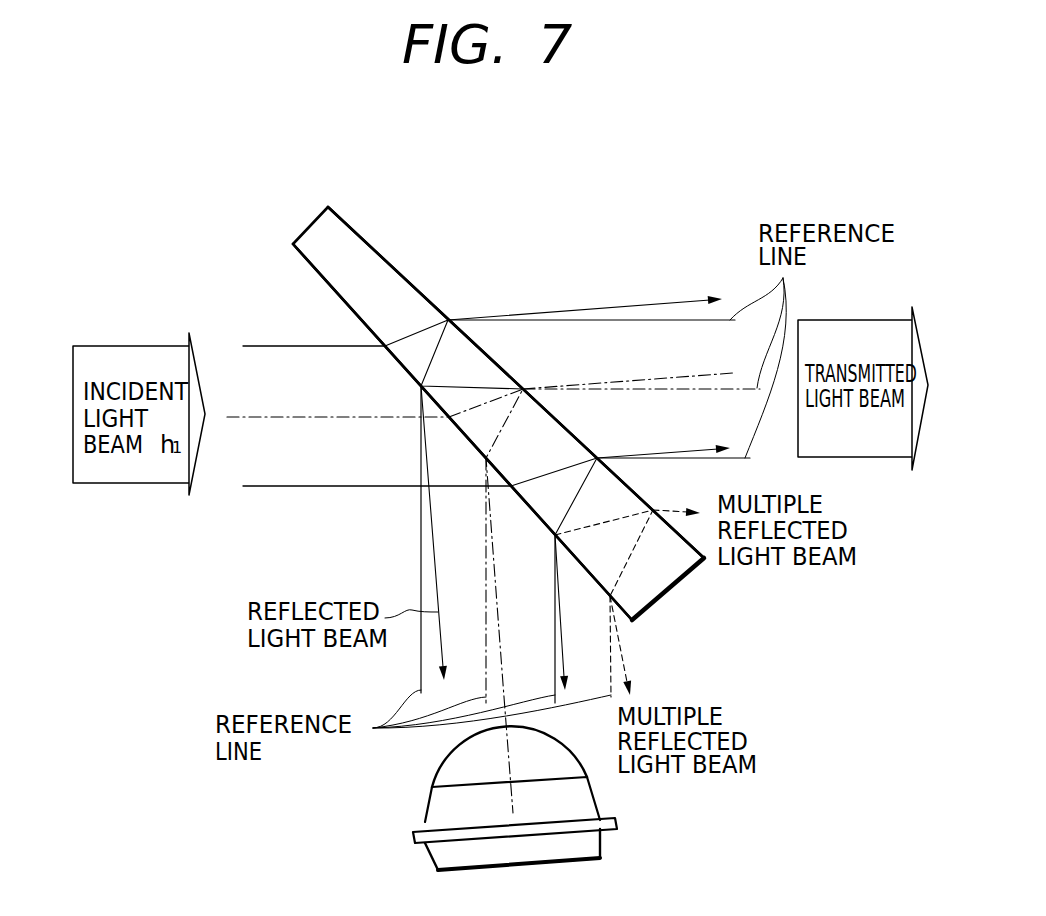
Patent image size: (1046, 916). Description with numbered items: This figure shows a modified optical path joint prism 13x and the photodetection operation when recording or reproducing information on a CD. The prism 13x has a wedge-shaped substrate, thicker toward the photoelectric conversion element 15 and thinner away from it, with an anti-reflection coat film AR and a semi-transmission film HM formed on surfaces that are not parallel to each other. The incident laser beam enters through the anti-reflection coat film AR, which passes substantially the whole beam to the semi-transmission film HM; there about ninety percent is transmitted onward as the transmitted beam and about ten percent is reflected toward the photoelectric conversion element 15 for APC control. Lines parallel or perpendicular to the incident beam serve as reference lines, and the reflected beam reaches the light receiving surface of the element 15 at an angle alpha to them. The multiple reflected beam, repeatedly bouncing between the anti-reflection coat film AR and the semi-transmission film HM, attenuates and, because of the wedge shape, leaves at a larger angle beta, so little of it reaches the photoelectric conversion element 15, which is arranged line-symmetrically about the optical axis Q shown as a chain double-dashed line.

The optical path joint prism 13x is at (313, 222).
The semi-transmission film HM is at (372, 247).
The anti-reflection coat film AR is at (312, 267).
The optical axis of incident light beam Q is at (305, 414).
The photoelectric conversion element 15 is at (587, 842).